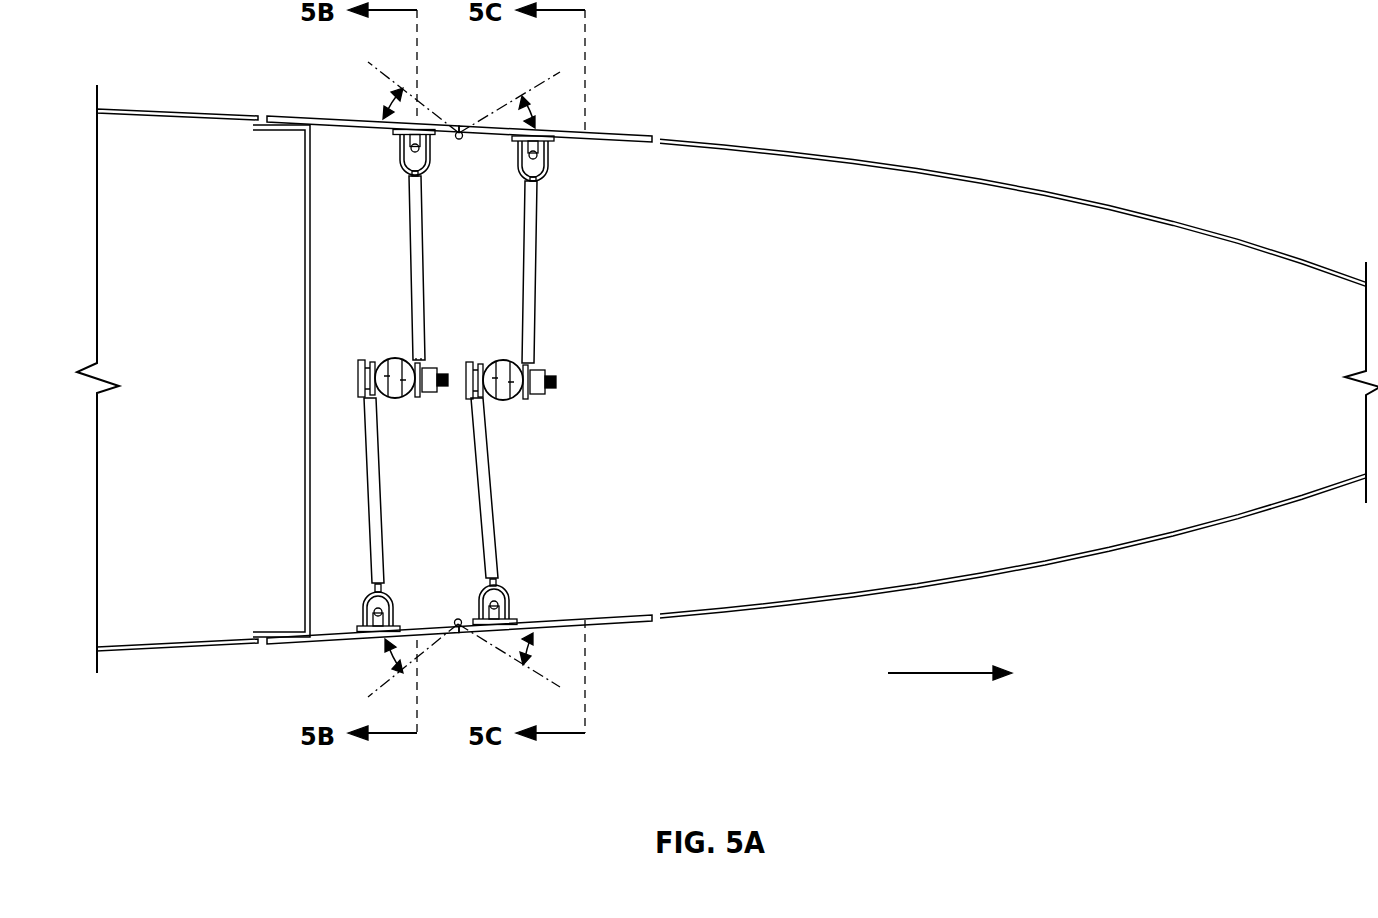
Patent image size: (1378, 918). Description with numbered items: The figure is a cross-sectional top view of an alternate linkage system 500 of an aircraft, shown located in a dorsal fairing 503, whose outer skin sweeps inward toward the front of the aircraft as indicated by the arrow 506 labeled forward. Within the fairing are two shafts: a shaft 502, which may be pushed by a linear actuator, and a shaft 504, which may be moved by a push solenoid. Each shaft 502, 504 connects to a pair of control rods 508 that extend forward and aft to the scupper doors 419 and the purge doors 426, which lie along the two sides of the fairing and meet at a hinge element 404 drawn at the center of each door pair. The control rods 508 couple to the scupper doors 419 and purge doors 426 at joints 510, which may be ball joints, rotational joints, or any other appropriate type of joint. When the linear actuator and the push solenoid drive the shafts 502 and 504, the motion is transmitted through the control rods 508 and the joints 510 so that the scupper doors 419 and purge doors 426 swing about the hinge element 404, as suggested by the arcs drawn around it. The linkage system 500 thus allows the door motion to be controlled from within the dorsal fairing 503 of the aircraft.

The linkage system 500 is at (992, 68).
The dorsal fairing 503 is at (1118, 205).
The scupper doors 419 is at (288, 115).
The purge doors 426 is at (637, 134).
The hinge 404 is at (461, 120).
The joints 510 is at (398, 148).
The control rods 508 is at (408, 254).
The shaft 502 is at (401, 398).
The shaft 504 is at (494, 360).
The arrow 506 is at (928, 673).